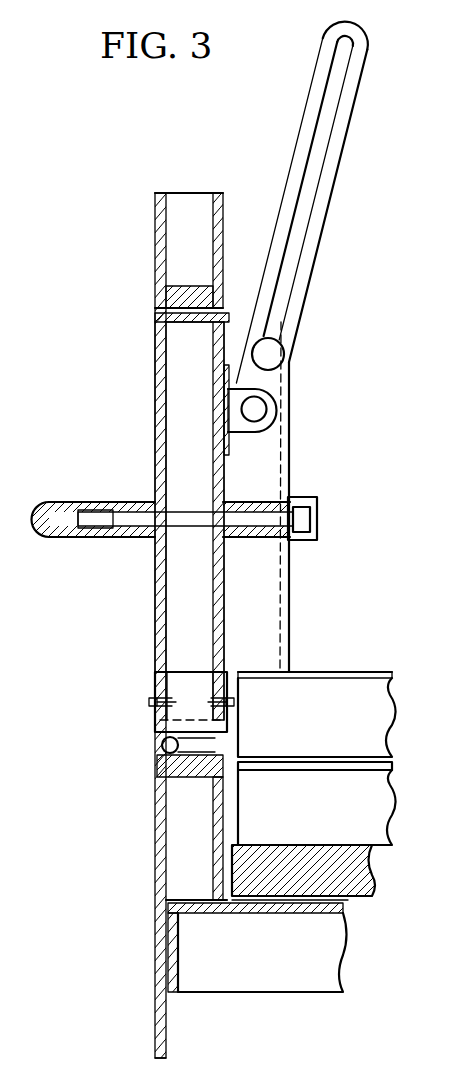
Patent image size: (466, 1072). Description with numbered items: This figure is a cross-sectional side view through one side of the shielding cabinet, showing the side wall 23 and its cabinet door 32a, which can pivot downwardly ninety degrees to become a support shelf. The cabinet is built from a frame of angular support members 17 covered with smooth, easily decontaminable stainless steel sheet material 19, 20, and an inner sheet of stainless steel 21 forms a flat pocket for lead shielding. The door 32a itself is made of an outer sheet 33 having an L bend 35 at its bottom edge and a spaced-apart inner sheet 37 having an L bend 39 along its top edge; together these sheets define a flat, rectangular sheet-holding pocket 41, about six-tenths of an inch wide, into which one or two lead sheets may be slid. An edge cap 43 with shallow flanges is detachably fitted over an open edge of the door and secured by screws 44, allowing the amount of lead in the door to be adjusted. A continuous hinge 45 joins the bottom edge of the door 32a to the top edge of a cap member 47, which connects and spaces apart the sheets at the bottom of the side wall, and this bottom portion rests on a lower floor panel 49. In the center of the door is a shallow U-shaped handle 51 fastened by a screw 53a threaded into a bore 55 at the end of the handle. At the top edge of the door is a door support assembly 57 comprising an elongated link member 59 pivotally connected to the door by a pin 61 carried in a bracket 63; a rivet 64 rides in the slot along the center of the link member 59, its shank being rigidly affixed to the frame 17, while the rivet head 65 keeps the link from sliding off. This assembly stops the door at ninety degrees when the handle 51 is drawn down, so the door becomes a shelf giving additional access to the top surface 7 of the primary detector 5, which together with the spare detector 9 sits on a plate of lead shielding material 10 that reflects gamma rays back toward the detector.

The side wall 23 is at (125, 172).
The stainless steel sheet material 19 is at (153, 218).
The stainless steel sheet material 20 is at (157, 1020).
The inner sheet of stainless steel 21 is at (226, 215).
The cap member 47 is at (178, 296).
The L bend 39 is at (228, 316).
The sheet-holding pocket 41 is at (188, 378).
The outer sheet 33 is at (154, 432).
The inner sheet of stainless steel 37 is at (226, 578).
The cabinet door 32a is at (118, 386).
The elongated link member 59 is at (343, 130).
The door support assembly 57 is at (332, 310).
The head 65 is at (285, 349).
The rivet 64 is at (290, 373).
The pin 61 is at (262, 413).
The bracket 63 is at (238, 433).
The handle 51 is at (72, 500).
The bore 55 is at (320, 511).
The screw 53a is at (312, 528).
The angular support member 17 is at (258, 638).
The top surface 7 is at (348, 672).
The detector 5 is at (370, 712).
The spare detector 9 is at (378, 812).
The lead shielding material 10 is at (357, 878).
The lower floor panel 49 is at (272, 965).
The edge cap 43 is at (190, 692).
The screw 44 is at (150, 703).
The L bend 35 is at (160, 722).
The continuous hinge 45 is at (163, 750).